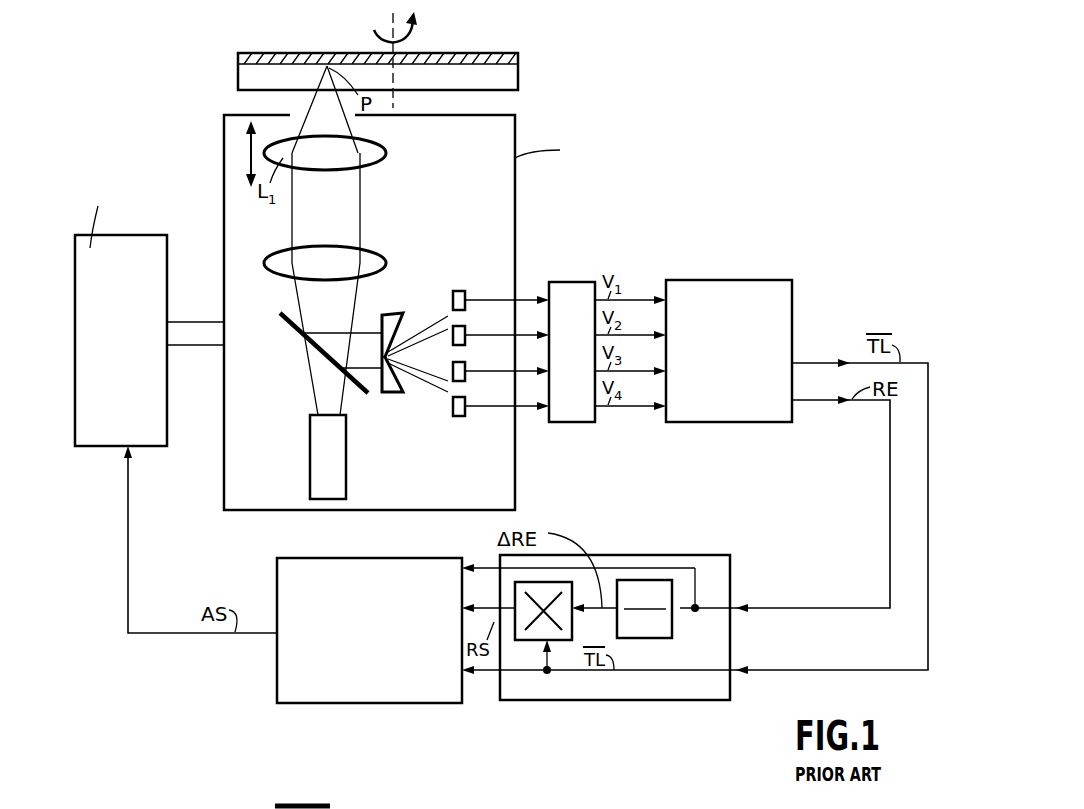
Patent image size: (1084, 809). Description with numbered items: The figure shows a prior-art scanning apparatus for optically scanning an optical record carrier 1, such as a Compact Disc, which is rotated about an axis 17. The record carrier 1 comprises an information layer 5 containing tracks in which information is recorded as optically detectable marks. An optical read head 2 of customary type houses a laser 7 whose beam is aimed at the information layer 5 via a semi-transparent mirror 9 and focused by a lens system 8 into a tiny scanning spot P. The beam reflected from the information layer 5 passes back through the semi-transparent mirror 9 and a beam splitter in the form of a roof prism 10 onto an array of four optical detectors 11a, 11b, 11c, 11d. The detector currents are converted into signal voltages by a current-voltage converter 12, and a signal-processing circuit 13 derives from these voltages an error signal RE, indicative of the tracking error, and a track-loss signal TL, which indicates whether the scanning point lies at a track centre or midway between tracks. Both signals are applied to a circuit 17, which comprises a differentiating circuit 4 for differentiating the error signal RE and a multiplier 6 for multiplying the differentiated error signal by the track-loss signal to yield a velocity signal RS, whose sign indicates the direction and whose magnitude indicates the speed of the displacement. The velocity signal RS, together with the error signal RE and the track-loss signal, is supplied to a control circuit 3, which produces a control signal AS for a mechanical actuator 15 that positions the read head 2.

The optical record carrier 1 is at (528, 60).
The optical read head 2 is at (515, 185).
The control circuit 3 is at (292, 681).
The differentiating circuit 4 is at (672, 626).
The information layer 5 is at (238, 62).
The multiplier 6 is at (542, 646).
The laser 7 is at (498, 54).
The lens system 8 is at (395, 152).
The semi-transparent mirror 9 is at (327, 352).
The roof prism 10 is at (393, 393).
The optical detector 11a is at (453, 300).
The optical detector 11b is at (453, 333).
The optical detector 11c is at (465, 380).
The optical detector 11d is at (453, 412).
The current-voltage converter 12 is at (585, 422).
The signal-processing circuit 13 is at (738, 422).
The mechanical actuator 15 is at (103, 448).
The circuit (also axis of rotation) 17 is at (392, 27).